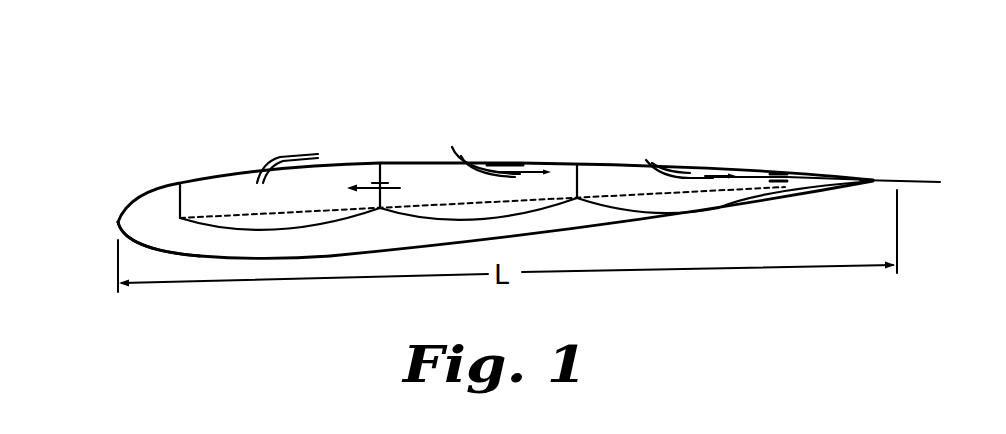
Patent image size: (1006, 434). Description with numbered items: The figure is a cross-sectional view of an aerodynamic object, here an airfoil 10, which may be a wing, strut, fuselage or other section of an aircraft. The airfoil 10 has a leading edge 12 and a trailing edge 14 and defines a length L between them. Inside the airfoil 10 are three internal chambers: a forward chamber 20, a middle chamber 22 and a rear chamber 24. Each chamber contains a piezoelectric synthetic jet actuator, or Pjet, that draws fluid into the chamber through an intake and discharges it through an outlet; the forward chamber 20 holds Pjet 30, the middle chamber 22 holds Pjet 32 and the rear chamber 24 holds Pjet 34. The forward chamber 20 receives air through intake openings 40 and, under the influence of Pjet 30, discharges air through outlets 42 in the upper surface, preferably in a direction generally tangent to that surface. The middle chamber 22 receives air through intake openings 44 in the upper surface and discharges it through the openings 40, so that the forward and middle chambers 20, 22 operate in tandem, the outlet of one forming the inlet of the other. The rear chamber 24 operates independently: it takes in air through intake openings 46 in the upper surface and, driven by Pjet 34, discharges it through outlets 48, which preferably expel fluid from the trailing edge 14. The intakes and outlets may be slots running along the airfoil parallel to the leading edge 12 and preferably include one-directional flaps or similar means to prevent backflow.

The airfoil 10 is at (770, 67).
The leading edge 12 is at (96, 178).
The trailing edge 14 is at (918, 148).
The forward chamber 20 is at (220, 190).
The middle chamber 22 is at (426, 172).
The rear chamber 24 is at (612, 172).
The Pjet 30 is at (327, 227).
The Pjet 32 is at (543, 212).
The Pjet 34 is at (718, 208).
The intake openings 40 is at (371, 168).
The outlets 42 is at (278, 150).
The intake openings 44 is at (463, 150).
The intake openings 46 is at (660, 147).
The outlets 48 is at (912, 197).